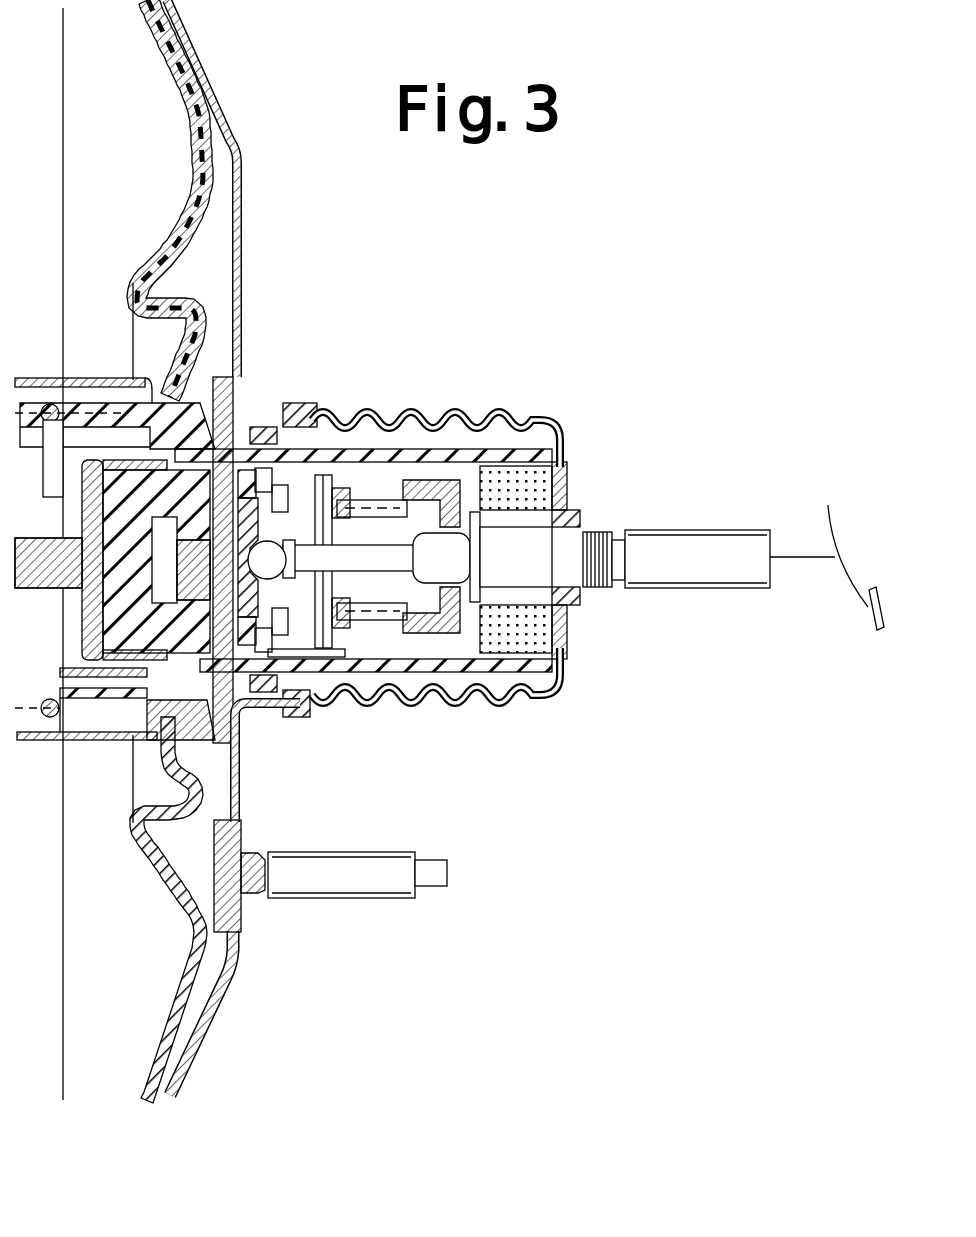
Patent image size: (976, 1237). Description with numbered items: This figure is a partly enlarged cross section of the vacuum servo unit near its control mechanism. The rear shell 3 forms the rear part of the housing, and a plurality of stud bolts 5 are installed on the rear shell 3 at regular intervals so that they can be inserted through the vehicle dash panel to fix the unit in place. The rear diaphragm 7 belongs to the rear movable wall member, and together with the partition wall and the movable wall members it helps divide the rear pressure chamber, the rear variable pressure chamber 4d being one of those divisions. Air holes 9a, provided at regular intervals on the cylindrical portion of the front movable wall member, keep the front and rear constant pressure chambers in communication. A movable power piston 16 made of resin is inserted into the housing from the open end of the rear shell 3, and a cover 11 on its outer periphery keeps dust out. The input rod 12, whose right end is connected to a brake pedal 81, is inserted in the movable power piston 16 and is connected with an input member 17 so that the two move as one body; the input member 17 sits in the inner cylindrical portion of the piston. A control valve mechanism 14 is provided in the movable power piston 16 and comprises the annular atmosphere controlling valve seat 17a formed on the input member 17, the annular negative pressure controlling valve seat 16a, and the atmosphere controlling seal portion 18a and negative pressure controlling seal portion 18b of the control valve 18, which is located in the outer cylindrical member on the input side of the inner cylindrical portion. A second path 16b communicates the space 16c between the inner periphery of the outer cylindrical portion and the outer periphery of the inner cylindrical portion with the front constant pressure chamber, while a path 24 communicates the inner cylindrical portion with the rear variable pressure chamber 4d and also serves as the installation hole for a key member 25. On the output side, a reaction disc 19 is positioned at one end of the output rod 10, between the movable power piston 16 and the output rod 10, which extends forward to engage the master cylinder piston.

The rear shell 3 is at (186, 33).
The rear diaphragm 7 is at (190, 66).
The rear variable pressure chamber 4d is at (215, 235).
The air holes 9a is at (133, 380).
The output rod 10 is at (50, 575).
The reaction disc 19 is at (120, 620).
The second path 16b is at (245, 363).
The input member 17 is at (270, 697).
The atmosphere controlling valve seat 17a is at (307, 680).
The space 16c is at (287, 420).
The negative pressure controlling valve seat 16a is at (323, 420).
The control valve mechanism 14 is at (347, 462).
The control valve 18 is at (365, 690).
The atmosphere controlling seal portion 18a is at (433, 417).
The negative pressure controlling seal portion 18b is at (342, 687).
The cover 11 is at (517, 410).
The movable power piston 16 is at (470, 703).
The input rod 12 is at (692, 530).
The brake pedal 81 is at (840, 527).
The path 24 is at (243, 708).
The key member 25 is at (213, 743).
The stud bolts 5 is at (380, 885).